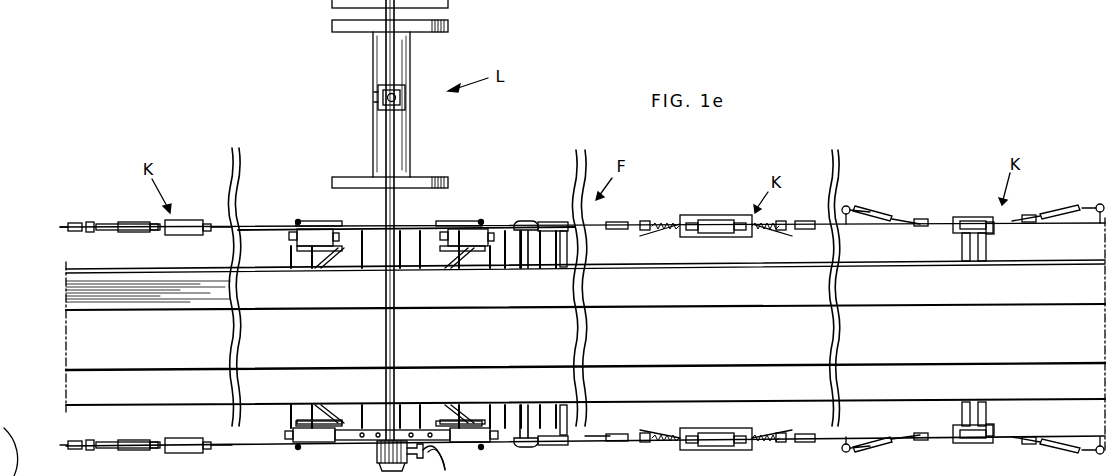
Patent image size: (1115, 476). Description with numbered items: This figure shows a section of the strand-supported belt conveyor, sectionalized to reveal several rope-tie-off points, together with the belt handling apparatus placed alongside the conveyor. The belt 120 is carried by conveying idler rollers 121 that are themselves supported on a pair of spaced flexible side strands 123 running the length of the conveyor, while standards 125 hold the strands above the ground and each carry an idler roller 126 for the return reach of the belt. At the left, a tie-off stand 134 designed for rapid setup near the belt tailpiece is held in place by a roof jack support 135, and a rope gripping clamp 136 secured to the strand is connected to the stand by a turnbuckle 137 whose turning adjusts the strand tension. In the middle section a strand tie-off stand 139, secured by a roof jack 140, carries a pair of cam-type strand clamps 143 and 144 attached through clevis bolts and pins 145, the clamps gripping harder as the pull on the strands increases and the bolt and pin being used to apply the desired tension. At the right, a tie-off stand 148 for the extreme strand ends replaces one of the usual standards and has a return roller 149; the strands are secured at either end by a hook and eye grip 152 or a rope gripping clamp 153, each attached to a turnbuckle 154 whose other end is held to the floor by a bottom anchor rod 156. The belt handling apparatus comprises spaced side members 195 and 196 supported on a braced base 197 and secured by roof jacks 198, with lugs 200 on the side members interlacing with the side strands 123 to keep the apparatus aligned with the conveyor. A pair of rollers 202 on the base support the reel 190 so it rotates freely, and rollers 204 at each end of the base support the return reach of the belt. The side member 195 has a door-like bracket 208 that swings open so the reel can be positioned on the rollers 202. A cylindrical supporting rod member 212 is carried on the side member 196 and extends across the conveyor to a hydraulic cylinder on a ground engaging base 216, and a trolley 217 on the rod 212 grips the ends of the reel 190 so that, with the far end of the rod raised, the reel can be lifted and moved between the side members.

The belt 120 is at (130, 278).
The conveying idler roller 121 is at (526, 420).
The flexible side strand 123 is at (597, 434).
The standard 125 is at (556, 222).
The idler roller 126 is at (558, 256).
The tie-off stand 134 is at (207, 222).
The roof jack support 135 is at (183, 231).
The rope gripping clamp 136 is at (81, 221).
The turnbuckle 137 is at (133, 222).
The strand tie-off stand 139 is at (716, 237).
The roof jack 140 is at (716, 226).
The strand clamp 143 is at (614, 221).
The strand clamp 144 is at (800, 221).
The clevis bolt and pin 145 is at (660, 231).
The tie-off stand 148 is at (963, 218).
The return roller 149 is at (988, 405).
The hook and eye grip 152 is at (919, 218).
The rope gripping clamp 153 is at (1029, 215).
The turnbuckle 154 is at (874, 212).
The bottom anchor rod 156 is at (846, 206).
The reel 190 is at (410, 142).
The side member 195 is at (318, 220).
The side member 196 is at (356, 443).
The base 197 is at (335, 262).
The roof jack 198 is at (298, 238).
The lug 200 is at (297, 221).
The roller 202 is at (361, 263).
The roller 204 is at (292, 262).
The door-like bracket 208 is at (358, 226).
The supporting rod member 212 is at (396, 341).
The ground engaging base 216 is at (449, 1).
The trolley 217 is at (378, 97).